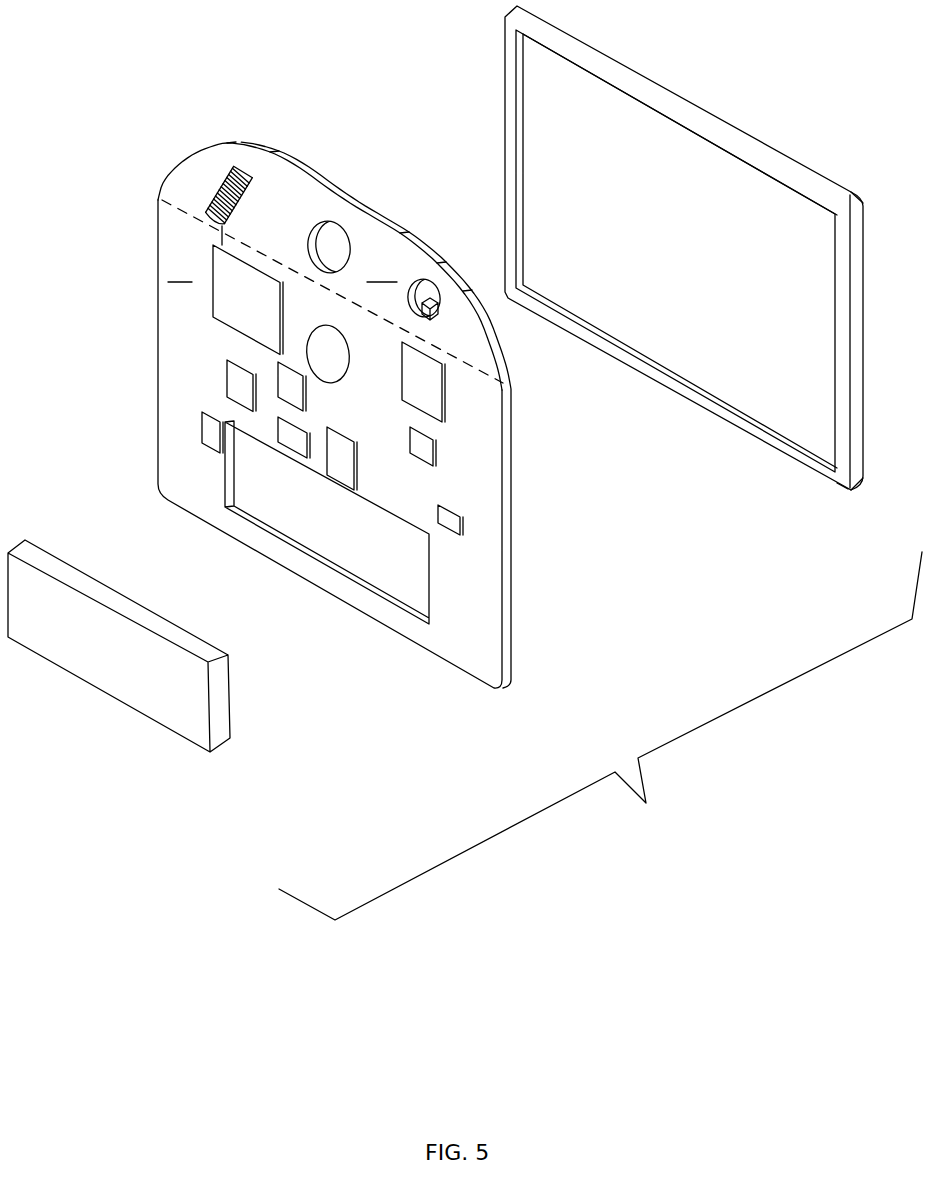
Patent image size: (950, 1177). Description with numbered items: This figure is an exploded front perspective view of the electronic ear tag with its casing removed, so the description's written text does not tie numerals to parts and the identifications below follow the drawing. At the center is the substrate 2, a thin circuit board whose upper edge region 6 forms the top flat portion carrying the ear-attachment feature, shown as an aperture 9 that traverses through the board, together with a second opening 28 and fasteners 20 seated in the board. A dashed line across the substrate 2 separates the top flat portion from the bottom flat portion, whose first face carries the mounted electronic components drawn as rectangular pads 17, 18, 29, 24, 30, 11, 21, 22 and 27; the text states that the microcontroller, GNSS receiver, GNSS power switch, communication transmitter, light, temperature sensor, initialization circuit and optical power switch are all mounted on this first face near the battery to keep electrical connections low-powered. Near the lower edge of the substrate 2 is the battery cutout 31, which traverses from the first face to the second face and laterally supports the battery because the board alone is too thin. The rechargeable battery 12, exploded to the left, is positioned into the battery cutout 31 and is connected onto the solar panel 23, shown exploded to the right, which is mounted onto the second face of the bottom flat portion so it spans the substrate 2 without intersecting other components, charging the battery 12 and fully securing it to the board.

The panel 2 is at (173, 190).
The panel edge 6 is at (157, 325).
The screw hole 9 is at (328, 249).
The pad 11 is at (345, 465).
The block 12 is at (100, 682).
The large pad 17 is at (237, 325).
The pad 18 is at (228, 375).
The screw 20 is at (210, 195).
The pad 21 is at (437, 385).
The pad 22 is at (425, 445).
The frame 23 is at (540, 188).
The pad 24 is at (213, 437).
The pad 27 is at (445, 530).
The circular opening 28 is at (340, 357).
The pad 29 is at (295, 385).
The pad 30 is at (290, 438).
The slot 31 is at (320, 527).